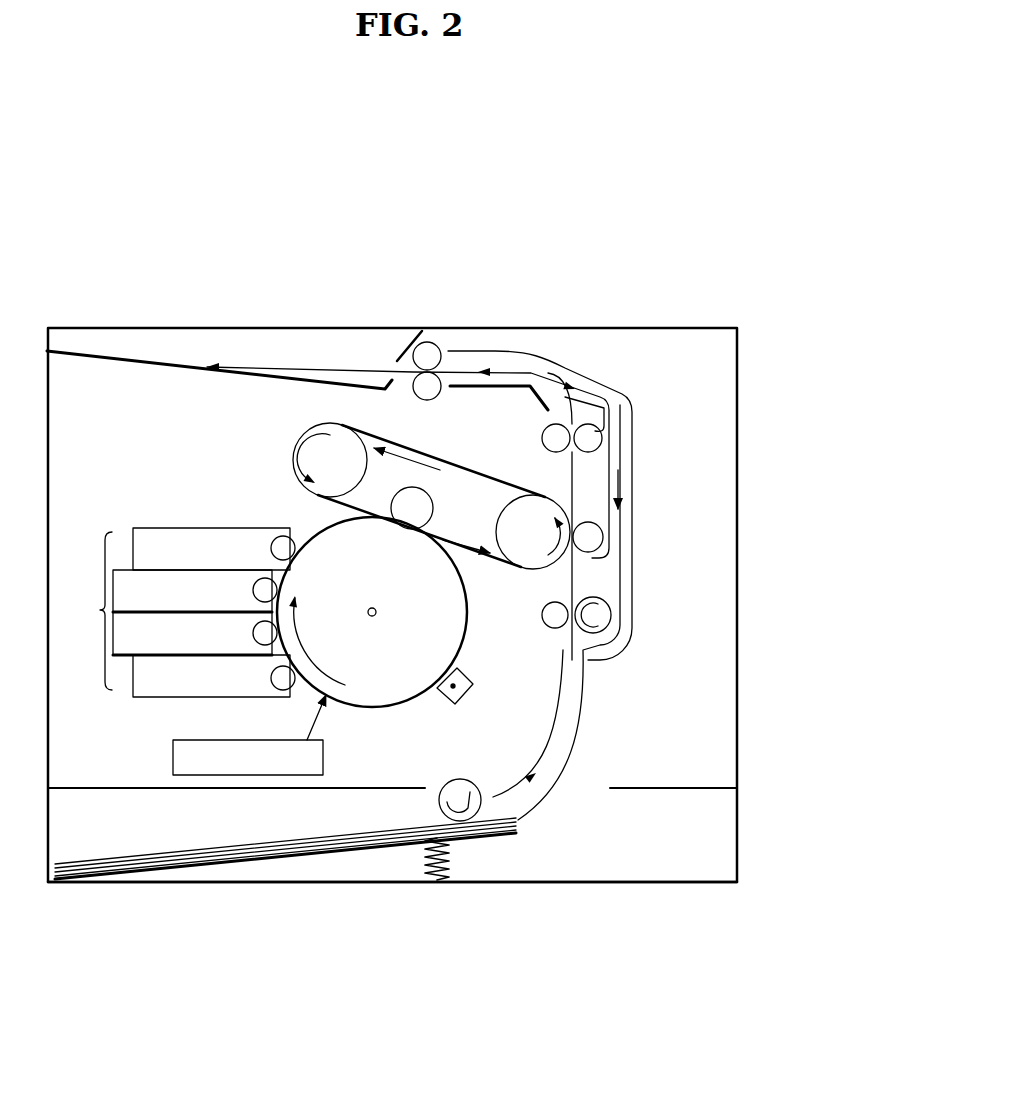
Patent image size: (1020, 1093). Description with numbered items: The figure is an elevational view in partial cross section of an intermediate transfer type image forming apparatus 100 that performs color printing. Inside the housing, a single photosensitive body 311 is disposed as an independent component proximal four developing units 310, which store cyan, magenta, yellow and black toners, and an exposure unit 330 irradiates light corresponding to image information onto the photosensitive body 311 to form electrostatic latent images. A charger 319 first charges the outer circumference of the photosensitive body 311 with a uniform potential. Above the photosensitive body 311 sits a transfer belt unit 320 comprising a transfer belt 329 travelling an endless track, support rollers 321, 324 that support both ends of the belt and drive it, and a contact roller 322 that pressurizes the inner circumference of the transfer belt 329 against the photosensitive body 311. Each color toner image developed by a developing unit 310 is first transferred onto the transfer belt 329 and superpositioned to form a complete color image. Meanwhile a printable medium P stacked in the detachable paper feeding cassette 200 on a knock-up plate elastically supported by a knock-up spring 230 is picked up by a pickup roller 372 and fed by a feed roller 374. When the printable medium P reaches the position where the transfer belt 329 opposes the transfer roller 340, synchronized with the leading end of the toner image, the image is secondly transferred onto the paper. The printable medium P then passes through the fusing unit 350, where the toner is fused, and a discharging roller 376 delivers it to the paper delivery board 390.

The intermediate transfer type image forming apparatus 100 is at (742, 380).
The paper feeding cassette 200 is at (365, 870).
The knock-up spring 230 is at (437, 880).
The developing unit 310 is at (177, 612).
The photosensitive body 311 is at (410, 637).
The charger 319 is at (458, 700).
The transfer belt unit 320 is at (431, 504).
The support roller 321 is at (330, 463).
The contact roller 322 is at (412, 508).
The support roller 324 is at (533, 532).
The transfer belt 329 is at (445, 467).
The exposure unit 330 is at (173, 757).
The transfer roller 340 is at (602, 537).
The fusing unit 350 is at (600, 452).
The pickup roller 372 is at (440, 800).
The feed roller 374 is at (600, 617).
The discharging roller 376 is at (440, 332).
The paper delivery board 390 is at (180, 365).
The printable medium P is at (137, 855).